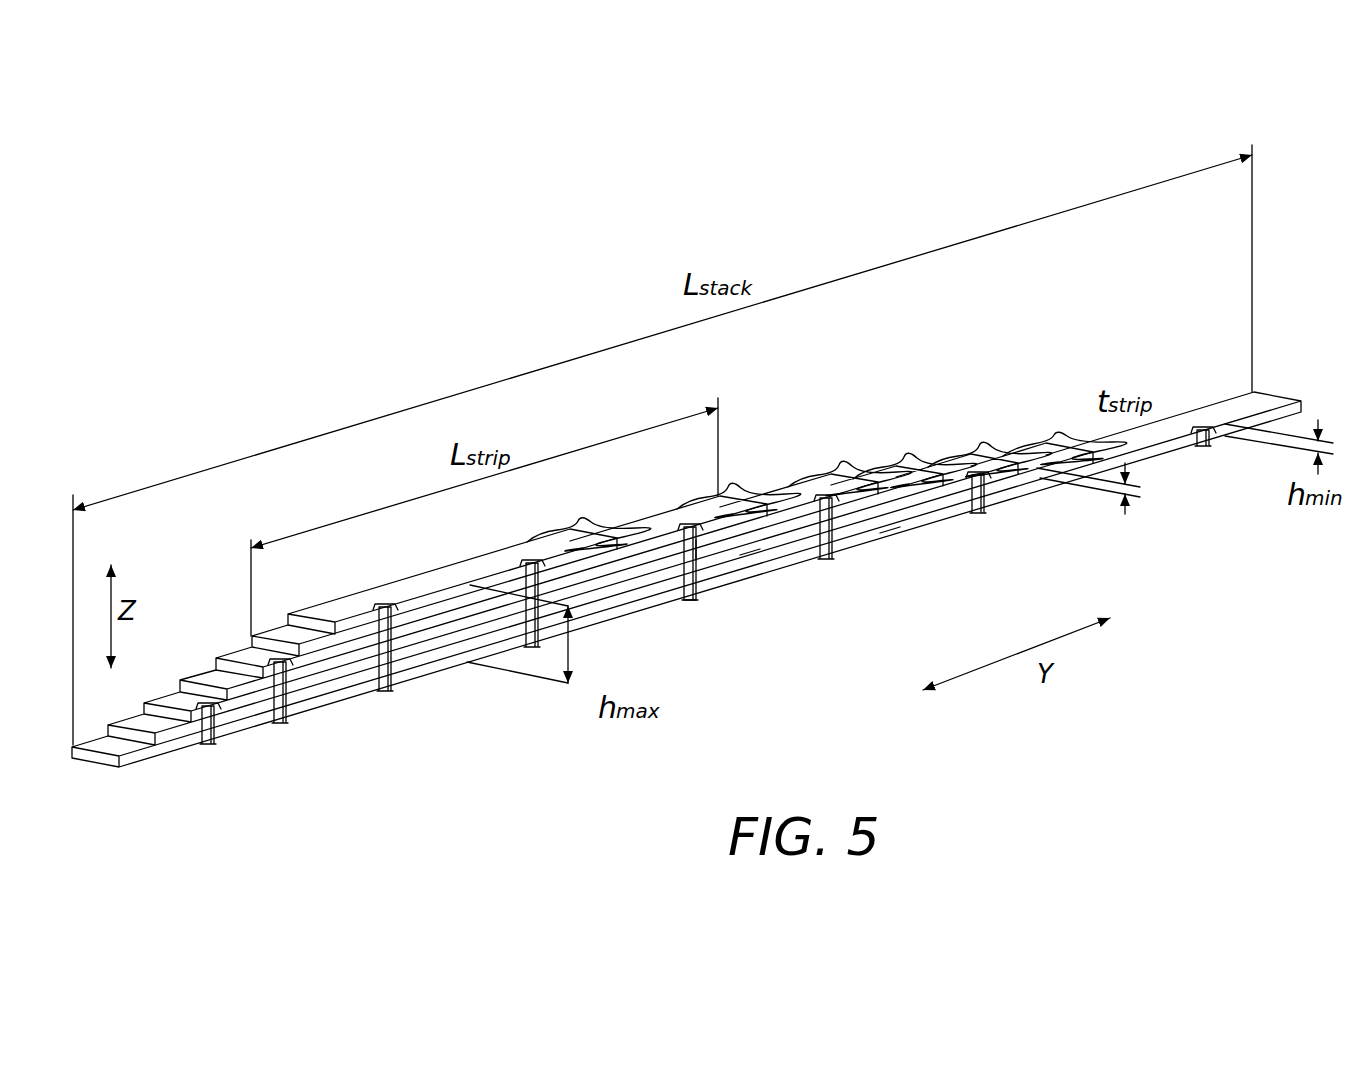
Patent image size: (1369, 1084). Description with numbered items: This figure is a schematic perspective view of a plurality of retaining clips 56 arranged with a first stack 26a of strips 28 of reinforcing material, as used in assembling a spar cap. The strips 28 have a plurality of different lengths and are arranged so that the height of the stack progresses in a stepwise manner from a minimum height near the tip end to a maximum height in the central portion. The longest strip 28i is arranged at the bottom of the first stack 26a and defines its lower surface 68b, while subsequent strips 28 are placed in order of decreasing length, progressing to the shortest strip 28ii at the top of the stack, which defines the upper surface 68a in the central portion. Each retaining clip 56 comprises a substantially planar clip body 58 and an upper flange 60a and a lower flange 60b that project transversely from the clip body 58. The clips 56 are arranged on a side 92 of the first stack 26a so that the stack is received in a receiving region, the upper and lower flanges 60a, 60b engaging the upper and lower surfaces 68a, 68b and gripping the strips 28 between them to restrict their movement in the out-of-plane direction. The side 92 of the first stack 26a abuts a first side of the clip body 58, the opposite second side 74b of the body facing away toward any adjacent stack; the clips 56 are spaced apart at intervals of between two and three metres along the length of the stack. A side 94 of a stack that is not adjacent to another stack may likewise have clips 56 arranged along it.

The first stack 26a is at (214, 565).
The strips 28 is at (334, 650).
The longest strip 28i is at (1170, 453).
The shortest strip 28ii is at (488, 555).
The retaining clip 56 is at (706, 585).
The clip body 58 is at (816, 569).
The upper flange 60a is at (687, 521).
The lower flange 60b is at (683, 604).
The upper surface 68a is at (404, 591).
The lower surface 68b is at (899, 545).
The second side 74b is at (703, 557).
The side 92 is at (747, 563).
The side 94 is at (774, 483).